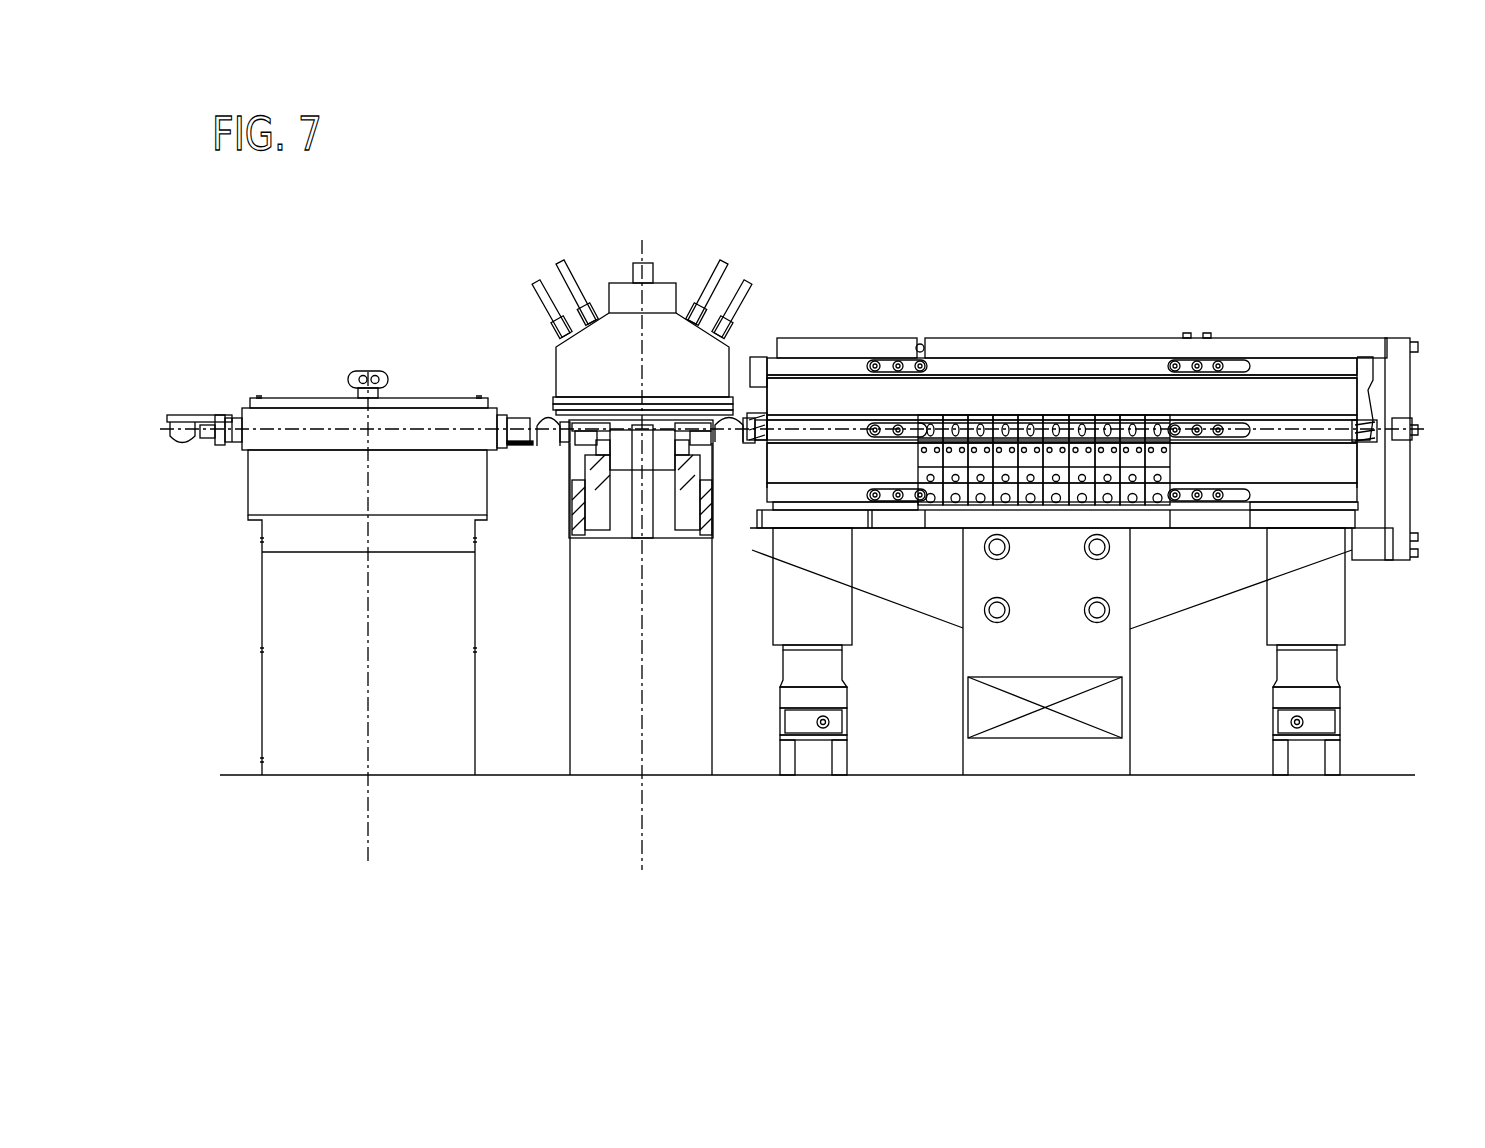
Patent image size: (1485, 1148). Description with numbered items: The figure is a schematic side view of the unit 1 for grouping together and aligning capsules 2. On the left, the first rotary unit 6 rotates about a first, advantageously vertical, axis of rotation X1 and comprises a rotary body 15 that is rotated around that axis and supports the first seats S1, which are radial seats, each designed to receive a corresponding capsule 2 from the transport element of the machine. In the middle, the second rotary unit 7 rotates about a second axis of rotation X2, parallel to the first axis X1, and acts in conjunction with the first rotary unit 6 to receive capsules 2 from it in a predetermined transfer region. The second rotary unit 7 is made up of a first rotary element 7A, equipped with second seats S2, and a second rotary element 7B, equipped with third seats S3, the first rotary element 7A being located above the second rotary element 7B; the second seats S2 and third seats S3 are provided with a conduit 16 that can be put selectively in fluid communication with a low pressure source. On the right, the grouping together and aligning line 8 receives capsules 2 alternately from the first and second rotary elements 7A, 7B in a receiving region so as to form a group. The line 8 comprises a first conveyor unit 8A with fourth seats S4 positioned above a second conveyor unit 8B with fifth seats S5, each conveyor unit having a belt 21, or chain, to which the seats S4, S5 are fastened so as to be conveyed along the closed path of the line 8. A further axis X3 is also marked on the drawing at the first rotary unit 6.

The unit 1 is at (460, 222).
The capsule 2 is at (185, 453).
The first rotary unit 6 is at (277, 385).
The second rotary unit 7 is at (668, 240).
The first rotary element 7A is at (590, 457).
The second rotary element 7B is at (702, 470).
The grouping together and aligning line 8 is at (943, 297).
The first conveyor unit 8A is at (1280, 367).
The second conveyor unit 8B is at (1302, 430).
The rotary body 15 is at (432, 387).
The conduit 16 is at (570, 449).
The belt 21 is at (884, 410).
The first seats S1 is at (193, 400).
The second seats S2 is at (538, 412).
The third seats S3 is at (723, 445).
The fourth seats S4 is at (740, 405).
The fifth seats S5 is at (1173, 415).
The first axis of rotation X1 is at (362, 798).
The second axis of rotation X2 is at (640, 808).
The third axis X3 is at (303, 425).